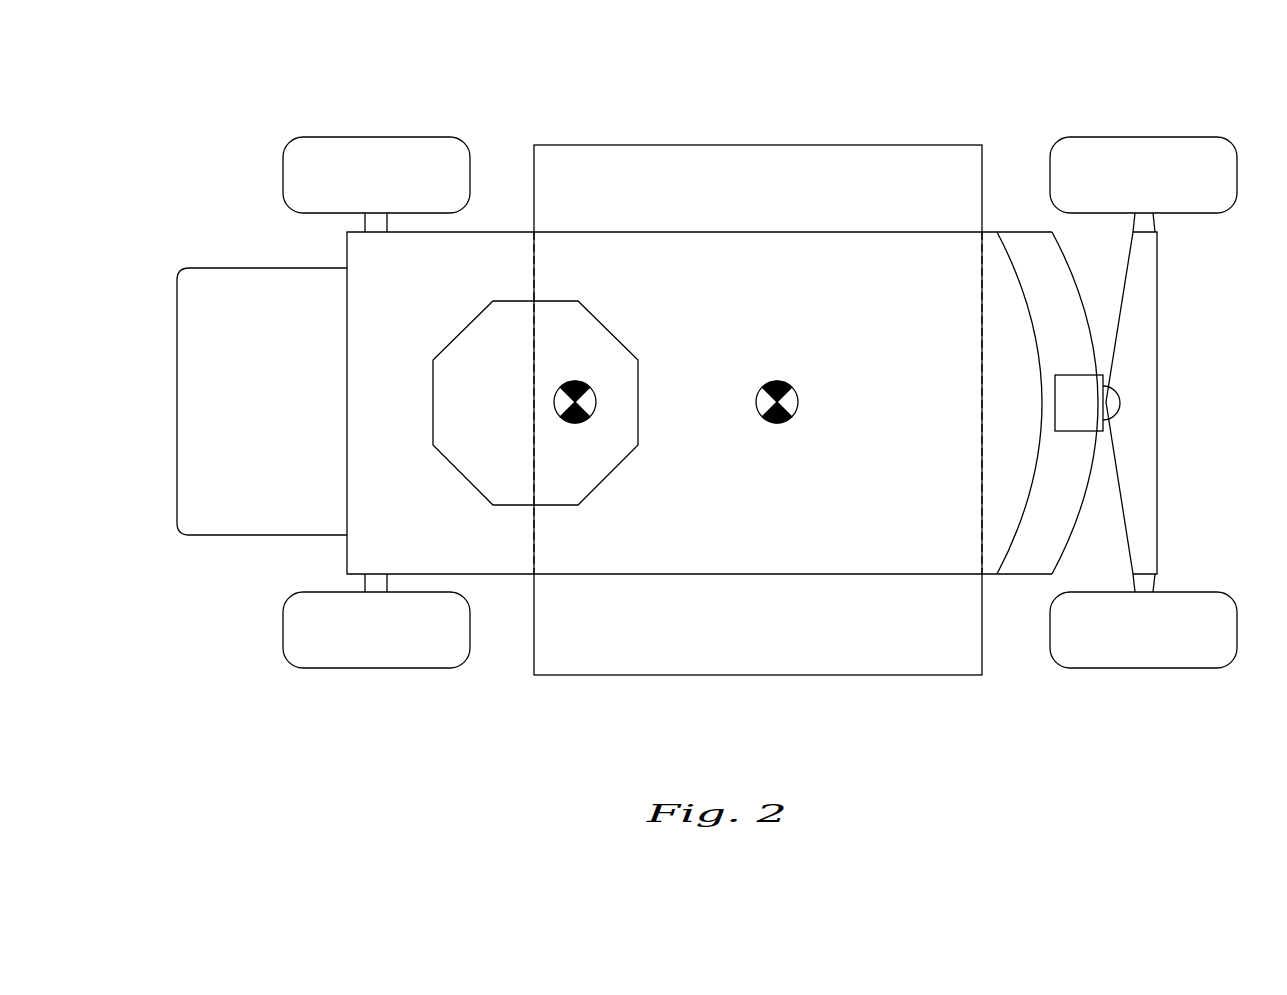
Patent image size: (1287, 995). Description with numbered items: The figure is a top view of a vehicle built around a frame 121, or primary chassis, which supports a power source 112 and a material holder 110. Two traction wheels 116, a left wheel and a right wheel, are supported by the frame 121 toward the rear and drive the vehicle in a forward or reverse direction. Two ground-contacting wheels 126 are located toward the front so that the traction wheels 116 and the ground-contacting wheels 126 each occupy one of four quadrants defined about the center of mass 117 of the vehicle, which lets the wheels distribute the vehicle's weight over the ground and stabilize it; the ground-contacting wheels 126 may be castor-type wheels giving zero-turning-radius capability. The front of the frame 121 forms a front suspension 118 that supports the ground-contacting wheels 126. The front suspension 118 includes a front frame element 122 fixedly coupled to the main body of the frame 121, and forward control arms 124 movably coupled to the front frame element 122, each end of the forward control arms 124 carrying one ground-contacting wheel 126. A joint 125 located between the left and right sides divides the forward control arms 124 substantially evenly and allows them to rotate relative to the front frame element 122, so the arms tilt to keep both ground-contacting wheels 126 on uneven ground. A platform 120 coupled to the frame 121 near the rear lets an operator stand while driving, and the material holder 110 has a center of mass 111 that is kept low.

The material holder 110 is at (687, 145).
The center of mass of the material holder 111 is at (799, 406).
The power source 112 is at (598, 485).
The traction wheels 116 is at (412, 137).
The center of mass of the vehicle 117 is at (597, 397).
The front suspension 118 is at (1189, 403).
The platform 120 is at (268, 456).
The frame 121 is at (802, 232).
The front frame element 122 is at (1087, 325).
The forward control arms 124 is at (1155, 298).
The joint 125 is at (1157, 432).
The ground-contacting wheels 126 is at (1117, 137).